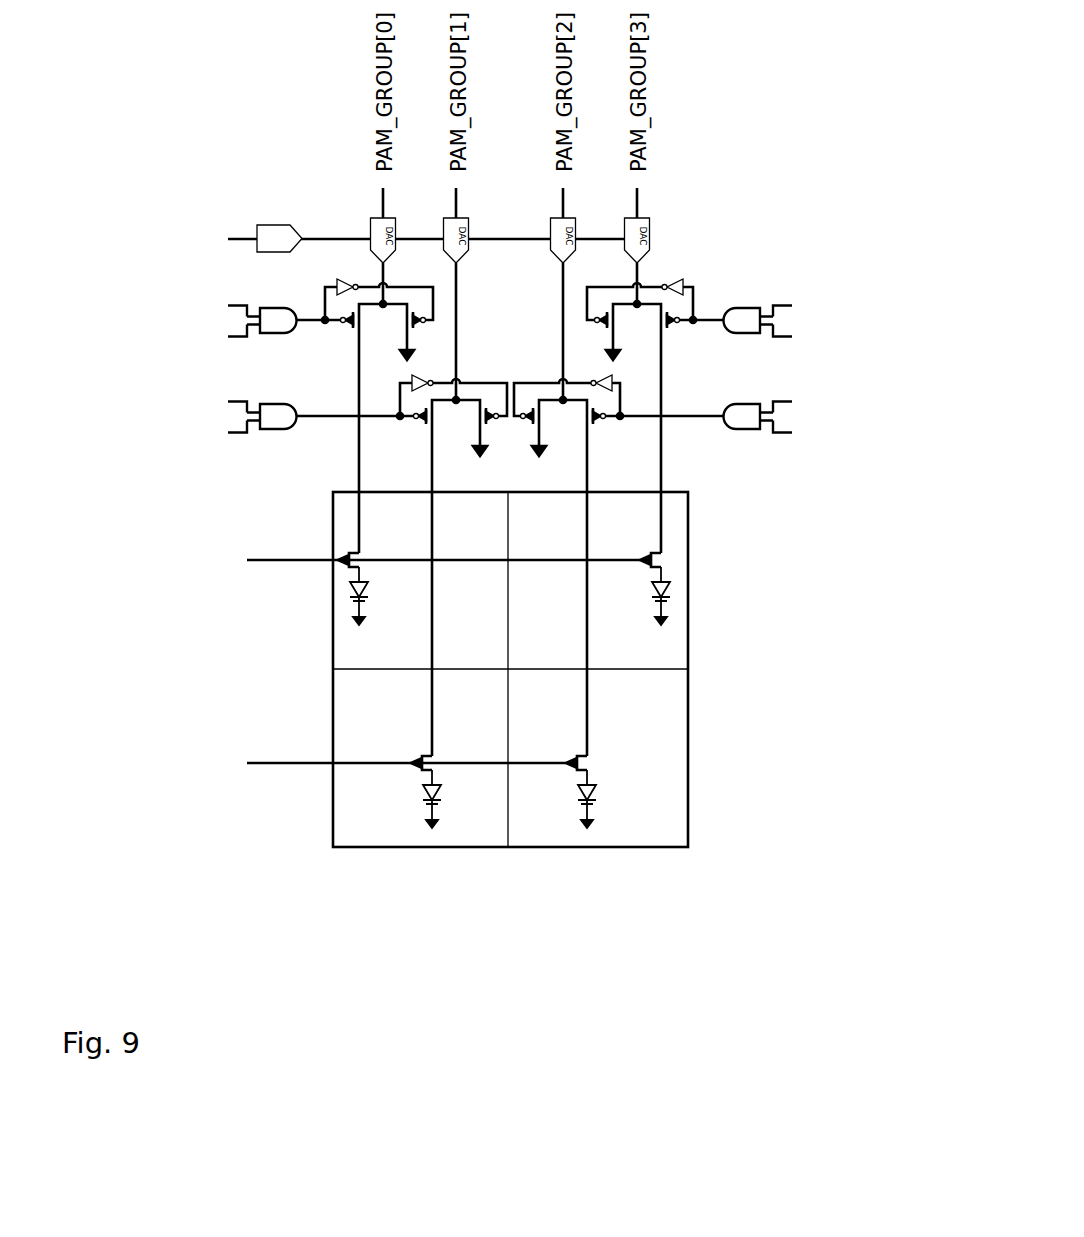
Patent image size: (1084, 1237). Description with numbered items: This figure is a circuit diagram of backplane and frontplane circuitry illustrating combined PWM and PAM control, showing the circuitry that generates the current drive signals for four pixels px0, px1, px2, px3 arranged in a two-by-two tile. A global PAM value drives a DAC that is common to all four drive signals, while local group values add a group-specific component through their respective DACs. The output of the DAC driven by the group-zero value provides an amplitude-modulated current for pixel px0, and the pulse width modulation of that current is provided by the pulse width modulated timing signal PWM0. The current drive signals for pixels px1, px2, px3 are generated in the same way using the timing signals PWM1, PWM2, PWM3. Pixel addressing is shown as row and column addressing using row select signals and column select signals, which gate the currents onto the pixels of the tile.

The pulse width modulated timing signal PWM0 is at (204, 319).
The pulse width modulated timing signal PWM1 is at (204, 417).
The pulse width modulated timing signal PWM2 is at (830, 416).
The pulse width modulated timing signal PWM3 is at (830, 319).
The pixel px0 is at (412, 595).
The pixel px1 is at (449, 756).
The pixel px2 is at (598, 594).
The pixel px3 is at (561, 756).